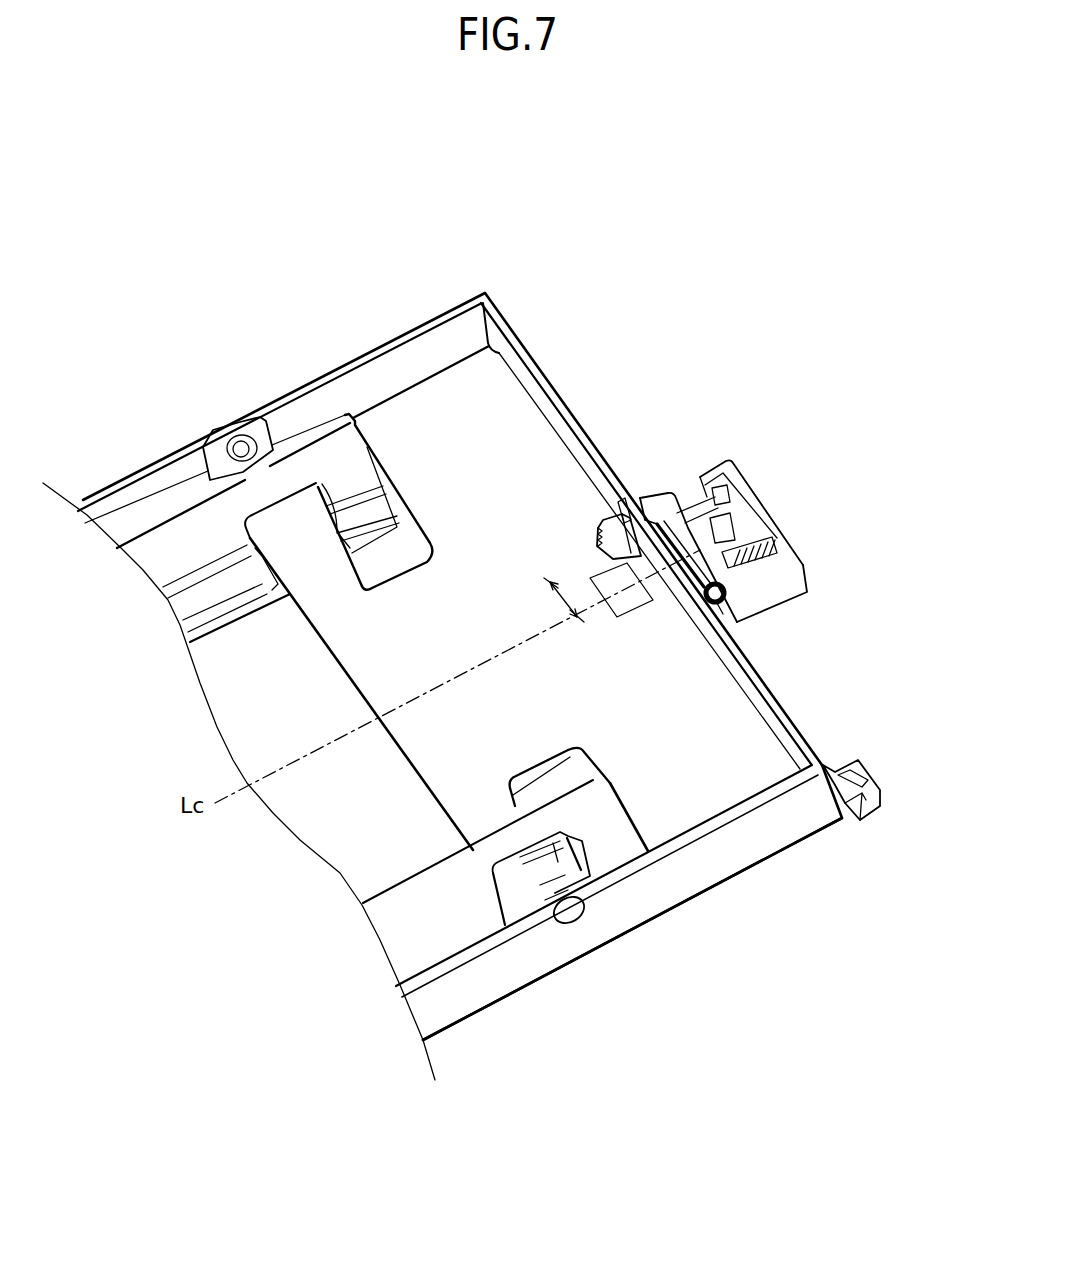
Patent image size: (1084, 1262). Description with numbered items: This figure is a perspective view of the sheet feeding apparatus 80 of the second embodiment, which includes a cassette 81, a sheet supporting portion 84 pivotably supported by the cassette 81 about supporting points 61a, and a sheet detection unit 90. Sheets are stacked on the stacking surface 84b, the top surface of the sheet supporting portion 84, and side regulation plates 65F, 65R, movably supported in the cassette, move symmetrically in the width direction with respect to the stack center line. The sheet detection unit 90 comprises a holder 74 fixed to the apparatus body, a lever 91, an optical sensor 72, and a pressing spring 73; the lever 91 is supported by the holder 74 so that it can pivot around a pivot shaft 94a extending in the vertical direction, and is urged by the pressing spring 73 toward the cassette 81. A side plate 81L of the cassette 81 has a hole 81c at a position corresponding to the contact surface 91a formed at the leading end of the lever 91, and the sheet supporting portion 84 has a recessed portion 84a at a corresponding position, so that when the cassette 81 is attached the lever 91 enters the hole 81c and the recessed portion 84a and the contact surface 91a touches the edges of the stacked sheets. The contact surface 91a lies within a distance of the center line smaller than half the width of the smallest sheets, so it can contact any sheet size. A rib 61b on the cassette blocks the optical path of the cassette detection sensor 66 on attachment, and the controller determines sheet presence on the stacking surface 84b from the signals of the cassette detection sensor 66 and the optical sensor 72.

The sheet feeding apparatus 80 is at (770, 323).
The cassette 81 is at (792, 882).
The side plate 81L is at (542, 382).
The hole 81c is at (618, 504).
The sheet supporting portion 84 is at (737, 728).
The recessed portion 84a is at (597, 541).
The stacking surface 84b is at (672, 800).
The supporting points 61a is at (240, 447).
The rib 61b is at (852, 770).
The side regulation plate 65F is at (160, 537).
The side regulation plate 65R is at (453, 925).
The cassette detection sensor 66 is at (873, 800).
The sheet detection unit 90 is at (671, 511).
The lever 91 is at (657, 497).
The contact surface 91a is at (600, 527).
The pivot shaft 94a is at (727, 602).
The optical sensor 72 is at (725, 478).
The pressing spring 73 is at (770, 545).
The holder 74 is at (792, 580).